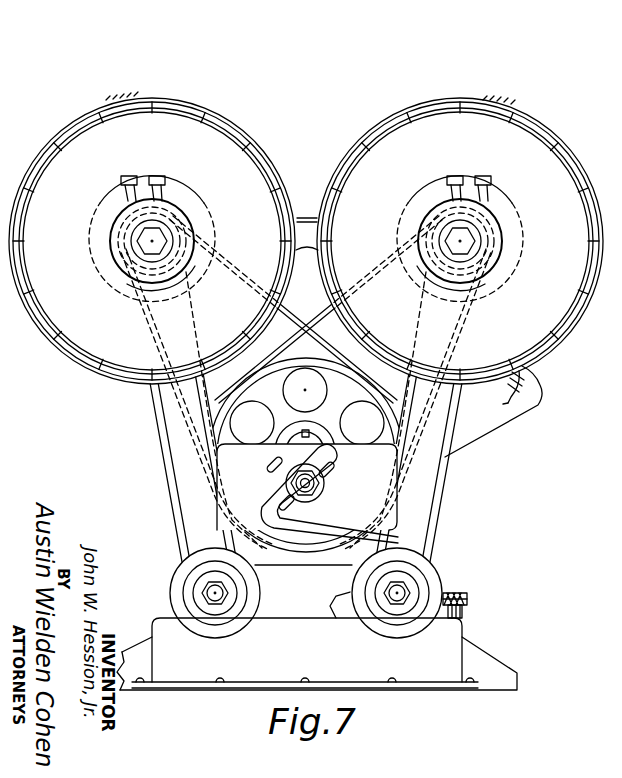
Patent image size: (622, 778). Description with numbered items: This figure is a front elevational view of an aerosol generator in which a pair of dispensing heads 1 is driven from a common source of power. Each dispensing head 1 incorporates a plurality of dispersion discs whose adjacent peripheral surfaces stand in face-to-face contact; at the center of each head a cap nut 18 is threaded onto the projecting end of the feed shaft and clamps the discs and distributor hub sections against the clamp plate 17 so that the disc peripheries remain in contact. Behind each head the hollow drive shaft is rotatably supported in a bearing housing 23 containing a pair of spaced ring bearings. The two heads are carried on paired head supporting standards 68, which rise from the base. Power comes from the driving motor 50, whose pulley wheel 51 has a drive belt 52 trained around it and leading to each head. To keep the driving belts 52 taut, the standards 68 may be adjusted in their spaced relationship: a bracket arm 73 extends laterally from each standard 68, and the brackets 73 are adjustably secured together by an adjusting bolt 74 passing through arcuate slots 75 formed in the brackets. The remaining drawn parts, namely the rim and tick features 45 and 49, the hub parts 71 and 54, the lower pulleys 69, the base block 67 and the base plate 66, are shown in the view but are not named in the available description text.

The dispensing head 1 is at (228, 127).
The rim 45 is at (191, 92).
The rim spokes 49 is at (132, 106).
The clamp plate 17 is at (177, 201).
The cap nut 18 is at (162, 232).
The hub pulley 71 is at (110, 218).
The hub rings 54 is at (216, 237).
The bearing housing 23 is at (187, 302).
The drive belt 52 is at (330, 317).
The pulley wheel 51 is at (318, 357).
The bracket arm 73 is at (238, 460).
The adjusting bolt 74 is at (314, 485).
The arcuate slots 75 is at (275, 471).
The head supporting standards 68 is at (166, 460).
The pulley 69 is at (213, 592).
The base block 67 is at (452, 637).
The base plate 66 is at (206, 690).
The driving motor 50 is at (492, 433).